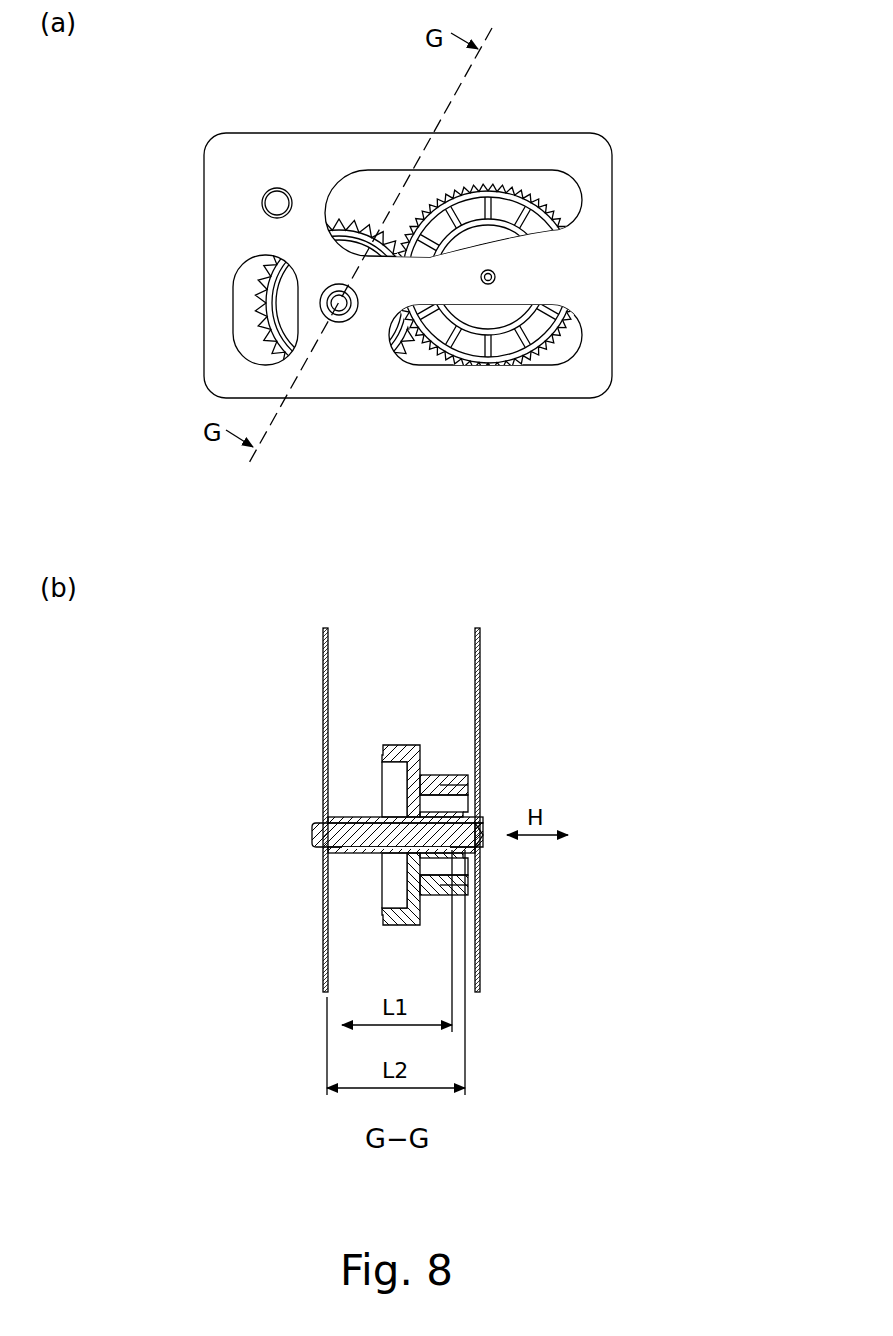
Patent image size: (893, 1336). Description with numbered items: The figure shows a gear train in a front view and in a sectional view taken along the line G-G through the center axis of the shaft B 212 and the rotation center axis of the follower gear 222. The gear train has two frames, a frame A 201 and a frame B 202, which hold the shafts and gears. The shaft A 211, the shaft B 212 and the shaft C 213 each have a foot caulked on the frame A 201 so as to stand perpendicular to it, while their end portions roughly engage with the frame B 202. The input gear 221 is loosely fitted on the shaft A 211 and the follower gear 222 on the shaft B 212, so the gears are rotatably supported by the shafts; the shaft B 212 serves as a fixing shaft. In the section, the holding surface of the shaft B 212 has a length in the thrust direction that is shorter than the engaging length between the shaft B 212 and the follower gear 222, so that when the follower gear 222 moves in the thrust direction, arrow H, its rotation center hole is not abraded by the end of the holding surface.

The frame A 201 is at (323, 652).
The frame B 202 is at (325, 170).
The shaft A 211 is at (496, 277).
The shaft B 212 is at (345, 322).
The shaft C 213 is at (282, 203).
The input gear 221 is at (527, 210).
The follower gear 222 is at (285, 305).